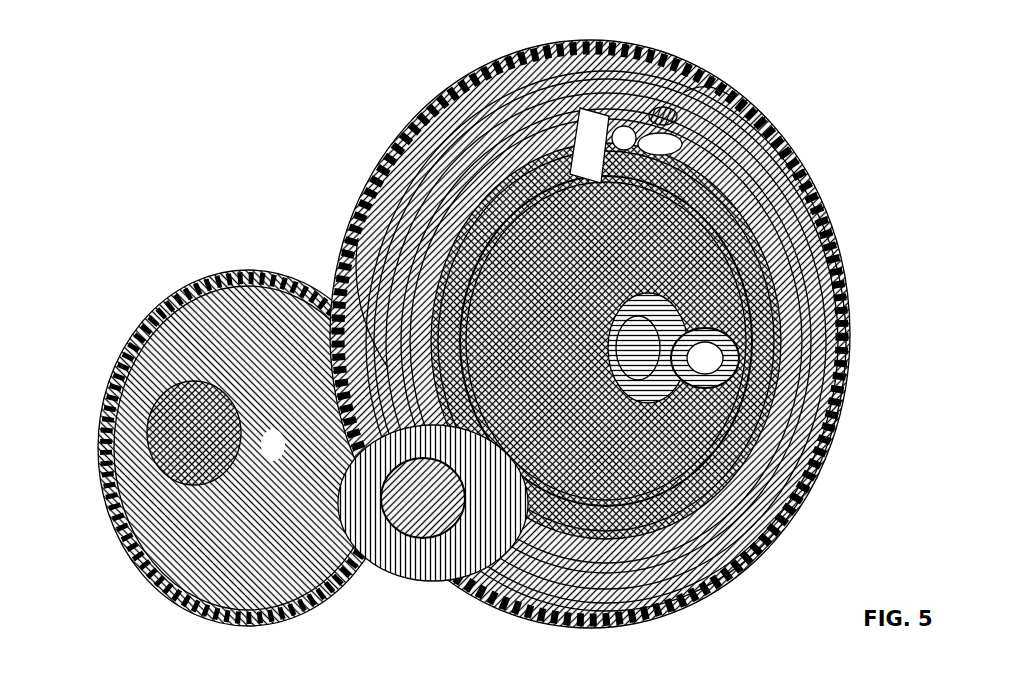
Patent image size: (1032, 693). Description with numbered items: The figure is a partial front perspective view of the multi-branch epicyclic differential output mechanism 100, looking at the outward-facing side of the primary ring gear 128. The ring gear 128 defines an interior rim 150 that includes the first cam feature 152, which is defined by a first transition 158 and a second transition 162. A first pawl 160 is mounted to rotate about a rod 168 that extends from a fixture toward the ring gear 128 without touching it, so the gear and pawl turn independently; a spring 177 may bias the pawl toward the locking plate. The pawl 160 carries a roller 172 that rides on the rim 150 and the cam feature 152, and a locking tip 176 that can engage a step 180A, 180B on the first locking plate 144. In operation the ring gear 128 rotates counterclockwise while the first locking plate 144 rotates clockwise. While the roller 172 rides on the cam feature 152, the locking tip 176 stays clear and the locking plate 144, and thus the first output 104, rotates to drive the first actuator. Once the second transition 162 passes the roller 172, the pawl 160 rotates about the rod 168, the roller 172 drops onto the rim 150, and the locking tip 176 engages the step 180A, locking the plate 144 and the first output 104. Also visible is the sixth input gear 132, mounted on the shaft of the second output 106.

The multi-branch epicyclic differential output mechanism 100 is at (486, 319).
The first output 104 is at (737, 362).
The second output 106 is at (447, 500).
The primary ring gear 128 is at (810, 442).
The sixth input gear 132 is at (125, 344).
The first locking plate 144 is at (603, 483).
The interior rim 150 is at (607, 67).
The first cam feature 152 is at (763, 473).
The first transition 158 is at (823, 325).
The first pawl 160 is at (653, 103).
The second transition 162 is at (408, 300).
The rod 168 is at (677, 138).
The roller 172 is at (693, 92).
The locking tip 176 is at (560, 167).
The spring 177 is at (630, 122).
The step 180A is at (580, 182).
The step 180B is at (665, 492).